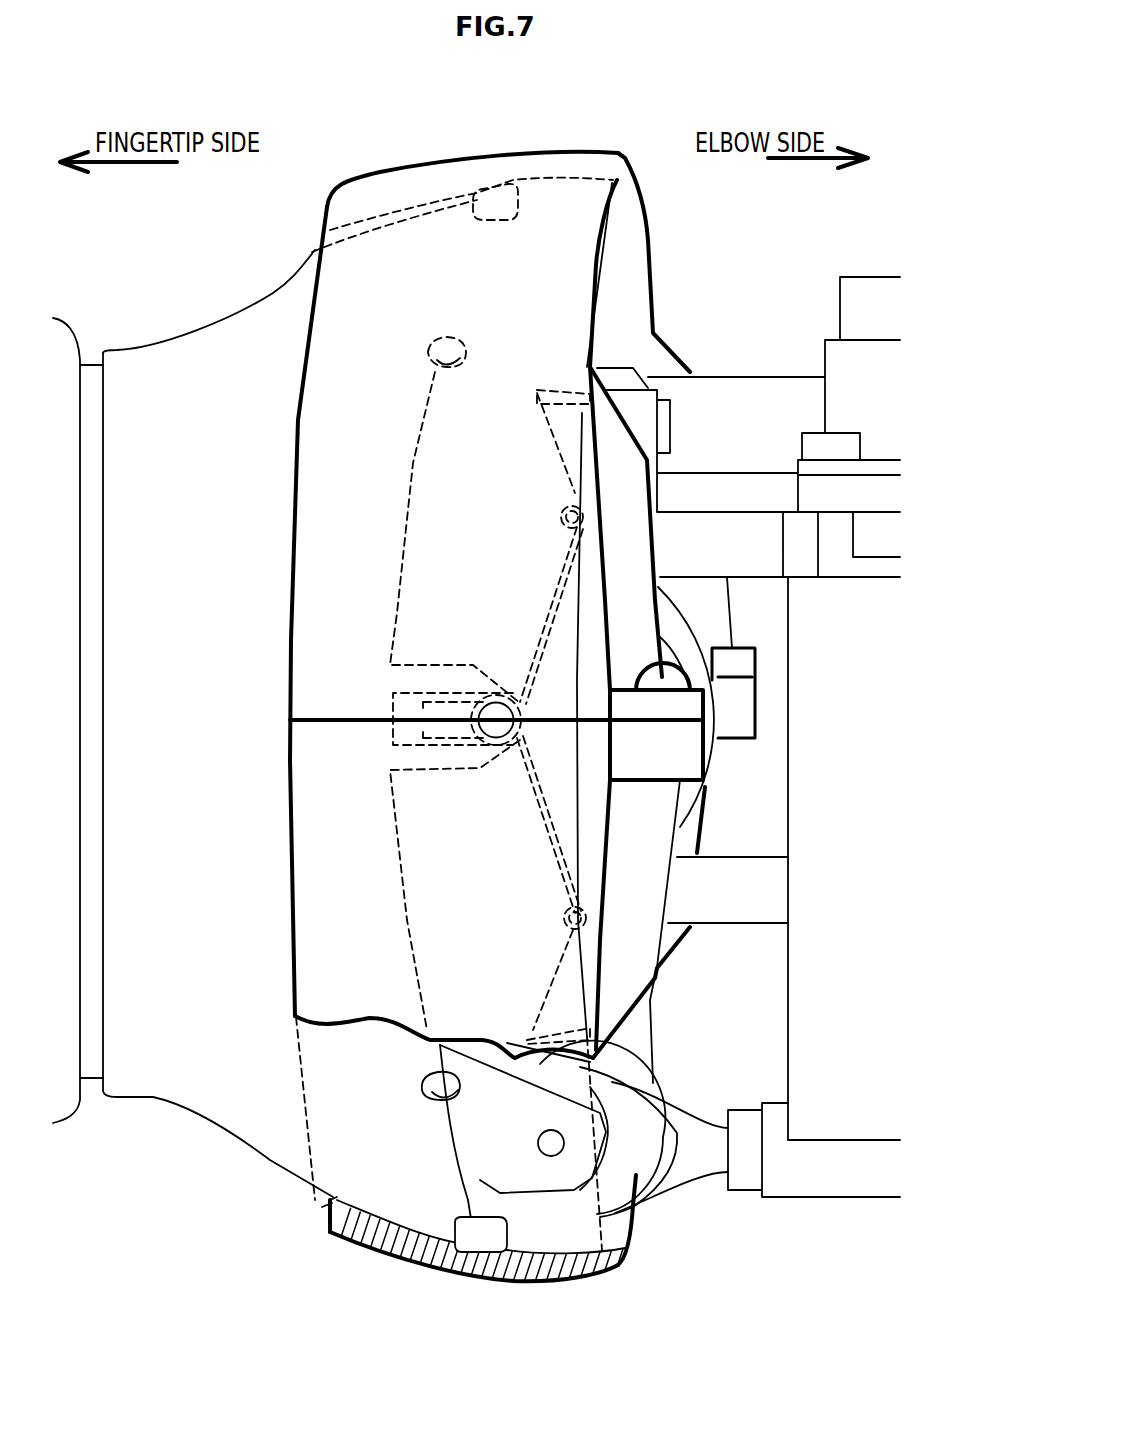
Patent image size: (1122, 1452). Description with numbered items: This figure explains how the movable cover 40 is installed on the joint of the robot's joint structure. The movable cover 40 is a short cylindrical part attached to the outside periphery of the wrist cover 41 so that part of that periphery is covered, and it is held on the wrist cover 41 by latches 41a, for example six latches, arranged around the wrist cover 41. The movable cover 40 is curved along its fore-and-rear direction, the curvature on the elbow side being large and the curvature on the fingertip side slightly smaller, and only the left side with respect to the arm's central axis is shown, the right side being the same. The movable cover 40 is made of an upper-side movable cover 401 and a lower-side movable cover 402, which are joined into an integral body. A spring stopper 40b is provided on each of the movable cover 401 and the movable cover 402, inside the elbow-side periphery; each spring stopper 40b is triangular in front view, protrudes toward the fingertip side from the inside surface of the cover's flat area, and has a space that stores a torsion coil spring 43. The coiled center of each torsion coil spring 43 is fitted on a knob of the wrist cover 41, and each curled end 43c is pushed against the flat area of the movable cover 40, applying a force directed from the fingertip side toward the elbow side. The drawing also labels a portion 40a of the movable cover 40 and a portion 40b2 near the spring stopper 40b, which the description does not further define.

The movable cover 40 is at (207, 642).
The movable cover 401 is at (318, 665).
The movable cover 402 is at (318, 765).
The curved top surface of cover 40a is at (428, 171).
The spring stopper 40b is at (545, 418).
The engaging portion 40b2 is at (535, 391).
The wrist cover 41 is at (155, 1098).
The latches 41a is at (530, 186).
The torsion coil spring 43 is at (553, 612).
The curled end 43c is at (560, 516).